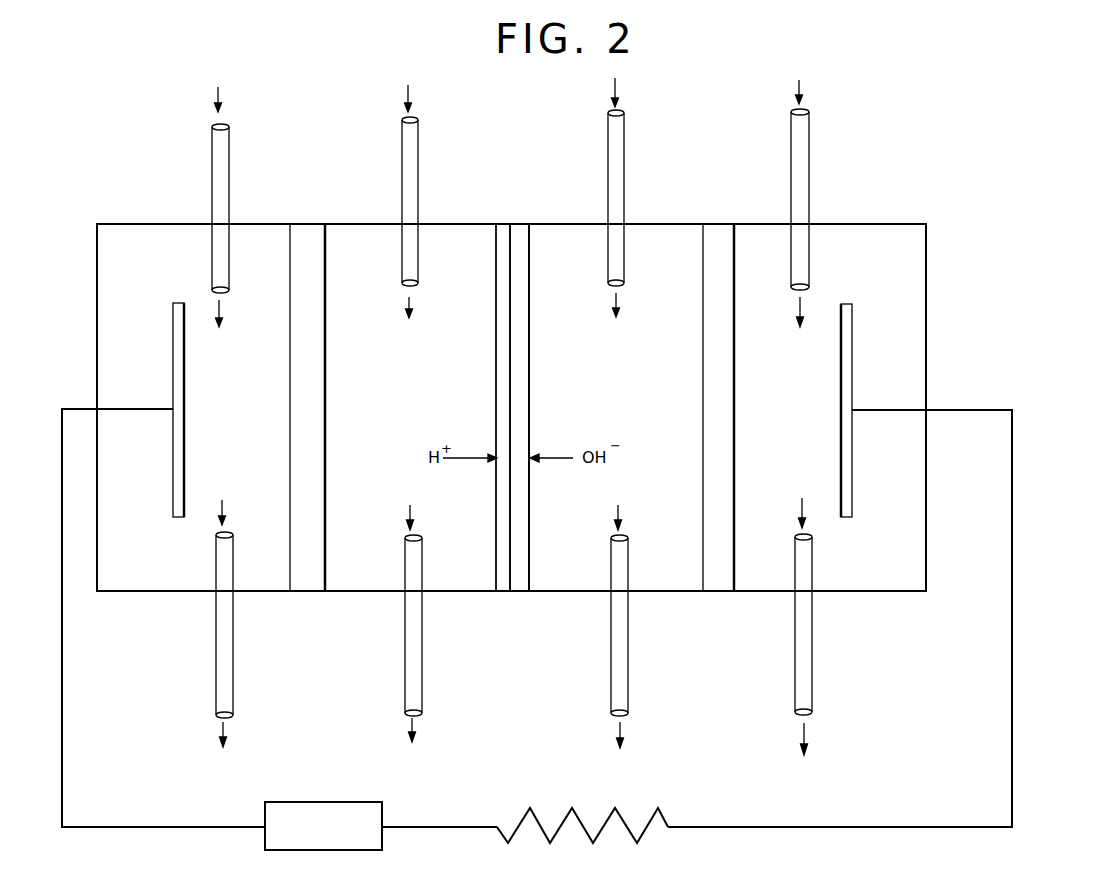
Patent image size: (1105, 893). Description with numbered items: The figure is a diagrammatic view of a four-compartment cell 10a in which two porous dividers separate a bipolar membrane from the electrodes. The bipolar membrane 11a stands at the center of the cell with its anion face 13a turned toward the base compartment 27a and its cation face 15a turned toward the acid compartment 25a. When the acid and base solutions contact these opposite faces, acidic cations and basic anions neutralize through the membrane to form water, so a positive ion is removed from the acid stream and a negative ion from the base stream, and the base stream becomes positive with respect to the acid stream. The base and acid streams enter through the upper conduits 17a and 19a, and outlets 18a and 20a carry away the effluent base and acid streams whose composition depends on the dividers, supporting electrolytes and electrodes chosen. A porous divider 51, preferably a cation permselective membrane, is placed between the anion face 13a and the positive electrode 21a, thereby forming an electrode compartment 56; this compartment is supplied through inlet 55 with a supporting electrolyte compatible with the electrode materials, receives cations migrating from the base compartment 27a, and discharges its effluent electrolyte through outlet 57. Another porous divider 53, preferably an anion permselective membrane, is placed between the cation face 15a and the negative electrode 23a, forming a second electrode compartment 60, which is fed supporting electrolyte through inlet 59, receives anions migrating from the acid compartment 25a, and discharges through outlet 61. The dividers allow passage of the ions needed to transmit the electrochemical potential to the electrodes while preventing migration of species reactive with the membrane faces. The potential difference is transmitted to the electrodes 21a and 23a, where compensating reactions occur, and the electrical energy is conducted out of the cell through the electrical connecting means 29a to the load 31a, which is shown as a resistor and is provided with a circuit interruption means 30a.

The electrolytic cell 10a is at (927, 268).
The bipolar membrane 11a is at (512, 216).
The anion face of bipolar membrane 13a is at (530, 315).
The cation face of bipolar membrane 15a is at (495, 315).
The inlet conduit to base compartment 17a is at (618, 160).
The outlet 18a is at (620, 657).
The inlet conduit to acid compartment 19a is at (410, 163).
The outlet 20a is at (413, 657).
The positive electrode 21a is at (855, 340).
The negative electrode 23a is at (175, 355).
The acid compartment 25a is at (420, 420).
The base compartment 27a is at (623, 420).
The electrical connecting means 29a is at (1013, 657).
The circuit interruption means 30a is at (346, 835).
The load 31a is at (662, 813).
The porous divider 51 is at (729, 279).
The porous divider 53 is at (321, 281).
The inlet 55 is at (802, 169).
The electrode compartment 56 is at (803, 406).
The outlet 57 is at (807, 657).
The inlet 59 is at (222, 172).
The electrode compartment 60 is at (246, 419).
The outlet 61 is at (225, 655).